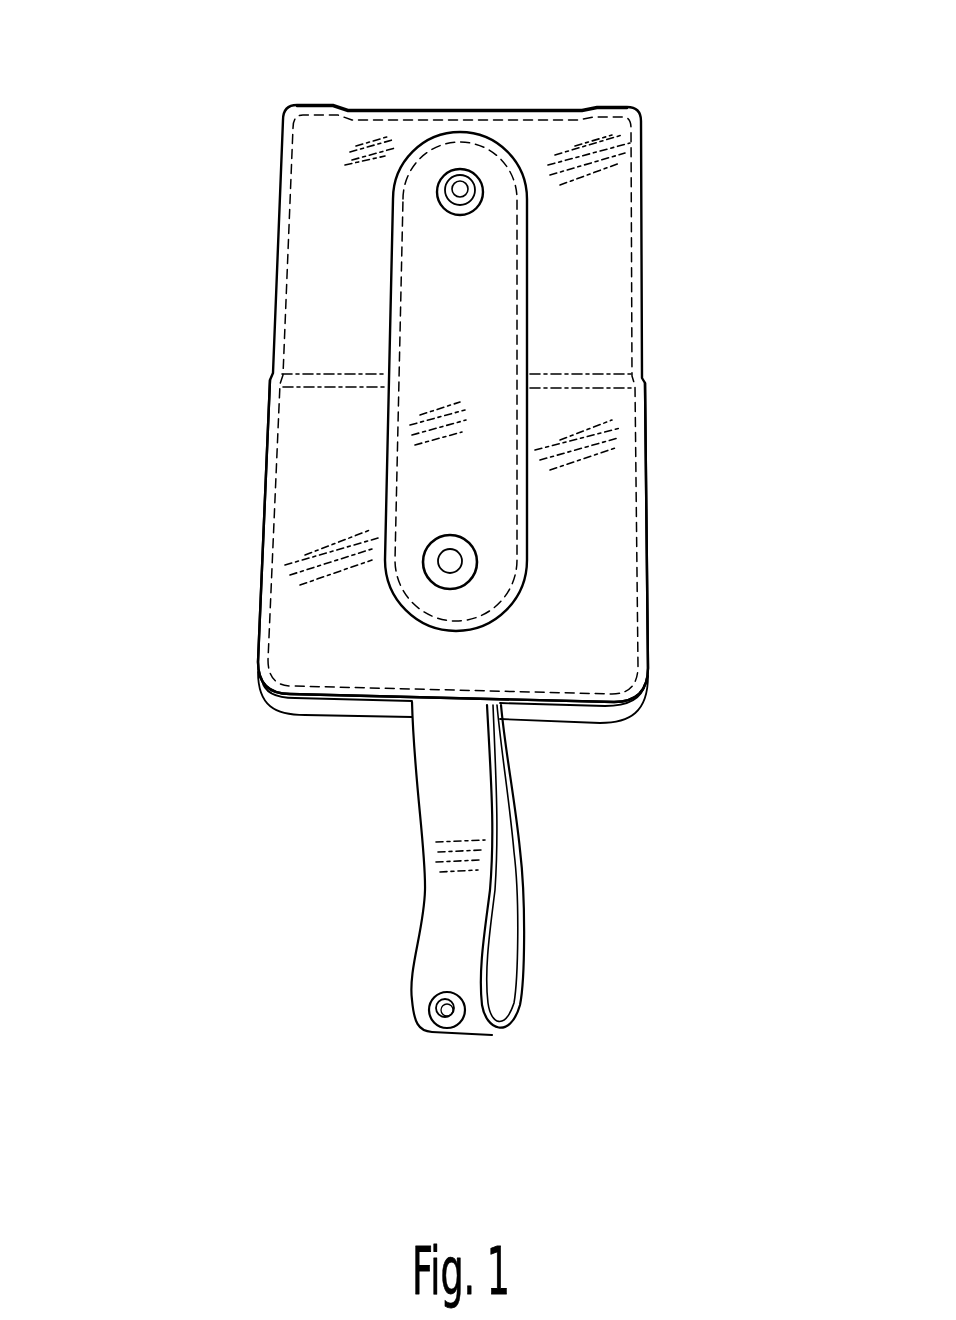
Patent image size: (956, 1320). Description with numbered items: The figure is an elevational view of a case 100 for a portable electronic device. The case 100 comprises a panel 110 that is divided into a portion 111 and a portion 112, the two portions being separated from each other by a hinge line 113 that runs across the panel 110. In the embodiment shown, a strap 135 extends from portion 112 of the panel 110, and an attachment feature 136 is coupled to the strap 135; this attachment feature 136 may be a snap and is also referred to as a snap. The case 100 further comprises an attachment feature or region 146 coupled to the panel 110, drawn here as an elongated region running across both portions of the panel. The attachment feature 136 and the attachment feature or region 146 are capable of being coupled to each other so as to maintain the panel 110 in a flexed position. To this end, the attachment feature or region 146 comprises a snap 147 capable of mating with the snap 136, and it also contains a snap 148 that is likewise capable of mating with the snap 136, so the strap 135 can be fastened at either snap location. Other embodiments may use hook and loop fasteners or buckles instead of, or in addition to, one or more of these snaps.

The case 100 is at (168, 108).
The panel 110 is at (297, 485).
The portion 111 is at (612, 283).
The portion 112 is at (613, 618).
The hinge line 113 is at (643, 380).
The strap 135 is at (468, 887).
The attachment feature 136 is at (430, 1000).
The attachment feature or region 146 is at (438, 388).
The snap 147 is at (460, 168).
The snap 148 is at (477, 570).